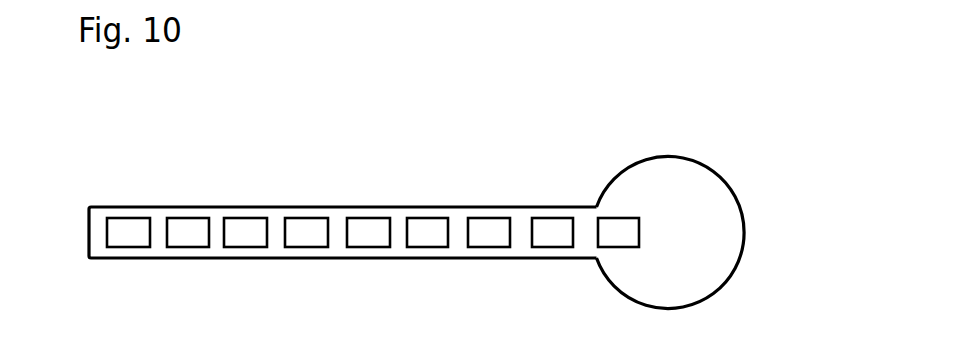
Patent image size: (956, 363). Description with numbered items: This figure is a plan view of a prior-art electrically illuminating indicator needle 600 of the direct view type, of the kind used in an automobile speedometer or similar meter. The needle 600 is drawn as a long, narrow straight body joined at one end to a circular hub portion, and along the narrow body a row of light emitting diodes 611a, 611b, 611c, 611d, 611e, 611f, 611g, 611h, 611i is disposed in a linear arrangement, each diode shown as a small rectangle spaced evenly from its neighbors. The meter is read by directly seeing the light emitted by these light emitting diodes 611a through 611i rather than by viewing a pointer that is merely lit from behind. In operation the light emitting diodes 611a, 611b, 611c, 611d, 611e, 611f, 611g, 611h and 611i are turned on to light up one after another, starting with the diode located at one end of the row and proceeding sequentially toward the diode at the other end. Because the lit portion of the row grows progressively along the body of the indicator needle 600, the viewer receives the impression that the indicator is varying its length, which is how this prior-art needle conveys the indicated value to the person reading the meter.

The electrically illuminating indicator needle 600 is at (803, 150).
The light emitting diode 611a is at (127, 240).
The light emitting diode 611b is at (188, 226).
The light emitting diode 611c is at (242, 237).
The light emitting diode 611d is at (303, 228).
The light emitting diode 611e is at (370, 240).
The light emitting diode 611f is at (425, 230).
The light emitting diode 611g is at (487, 237).
The light emitting diode 611h is at (552, 228).
The light emitting diode 611i is at (617, 237).